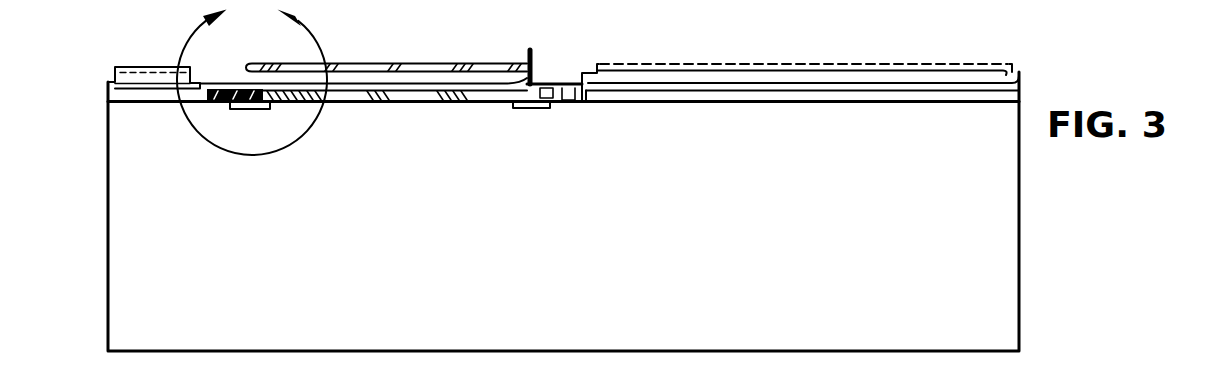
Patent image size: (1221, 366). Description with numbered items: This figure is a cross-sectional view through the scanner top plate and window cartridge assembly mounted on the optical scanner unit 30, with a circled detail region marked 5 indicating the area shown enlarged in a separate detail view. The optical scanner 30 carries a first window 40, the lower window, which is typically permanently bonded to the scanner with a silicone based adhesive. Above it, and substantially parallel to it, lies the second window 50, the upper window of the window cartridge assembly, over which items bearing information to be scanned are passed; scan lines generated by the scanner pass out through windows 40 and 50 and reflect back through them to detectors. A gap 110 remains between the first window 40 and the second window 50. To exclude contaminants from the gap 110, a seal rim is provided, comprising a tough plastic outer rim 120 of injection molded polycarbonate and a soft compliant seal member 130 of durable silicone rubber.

The optical scanner unit 30 is at (1019, 253).
The first window 40 is at (497, 101).
The second window 50 is at (538, 46).
The gap 110 is at (433, 80).
The outer rim 120 is at (568, 80).
The seal member 130 is at (488, 63).
The detail view circle for FIG. 5 is at (252, 77).